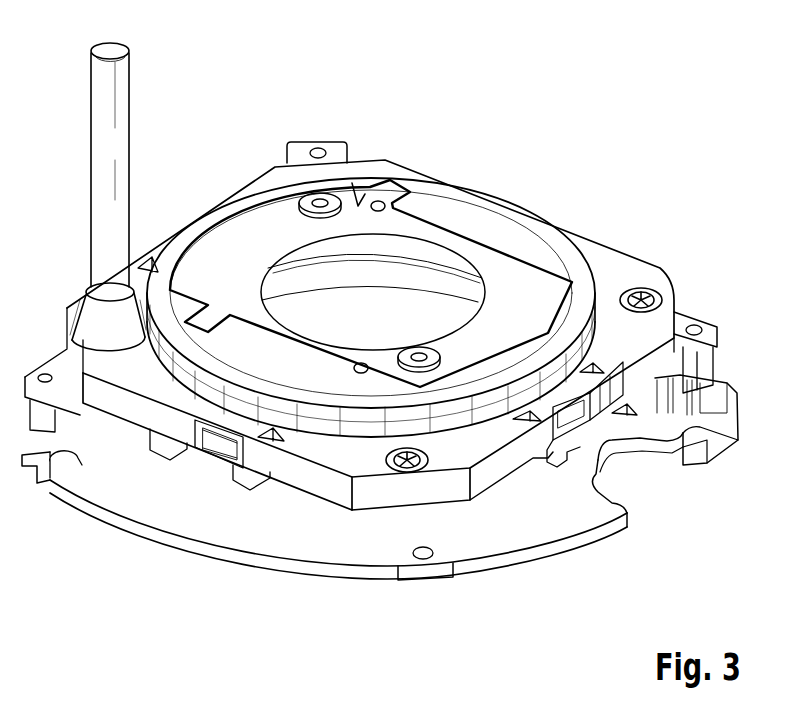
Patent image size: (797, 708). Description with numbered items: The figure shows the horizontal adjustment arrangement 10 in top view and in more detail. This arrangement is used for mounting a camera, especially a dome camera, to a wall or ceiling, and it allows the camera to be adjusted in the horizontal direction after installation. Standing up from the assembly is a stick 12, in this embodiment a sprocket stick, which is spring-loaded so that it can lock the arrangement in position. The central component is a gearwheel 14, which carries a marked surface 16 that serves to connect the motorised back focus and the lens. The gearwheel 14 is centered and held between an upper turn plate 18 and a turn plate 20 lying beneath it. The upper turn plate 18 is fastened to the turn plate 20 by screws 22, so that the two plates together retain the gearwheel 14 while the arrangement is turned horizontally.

The horizontal adjustment arrangement 10 is at (380, 338).
The stick 12 is at (114, 108).
The gearwheel 14 is at (460, 208).
The marked surface 16 is at (368, 203).
The upper turn plate 18 is at (143, 415).
The turn plate 20 is at (522, 530).
The screws 22 is at (650, 290).